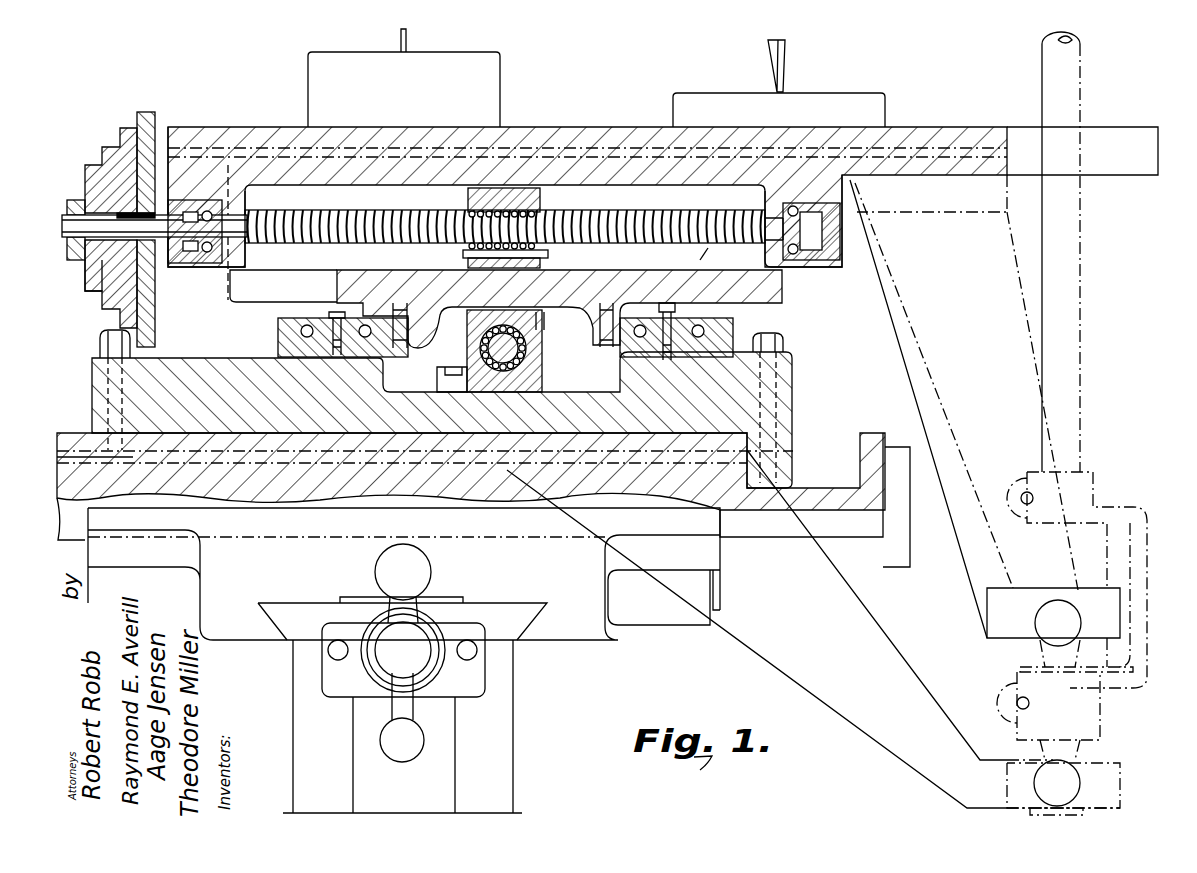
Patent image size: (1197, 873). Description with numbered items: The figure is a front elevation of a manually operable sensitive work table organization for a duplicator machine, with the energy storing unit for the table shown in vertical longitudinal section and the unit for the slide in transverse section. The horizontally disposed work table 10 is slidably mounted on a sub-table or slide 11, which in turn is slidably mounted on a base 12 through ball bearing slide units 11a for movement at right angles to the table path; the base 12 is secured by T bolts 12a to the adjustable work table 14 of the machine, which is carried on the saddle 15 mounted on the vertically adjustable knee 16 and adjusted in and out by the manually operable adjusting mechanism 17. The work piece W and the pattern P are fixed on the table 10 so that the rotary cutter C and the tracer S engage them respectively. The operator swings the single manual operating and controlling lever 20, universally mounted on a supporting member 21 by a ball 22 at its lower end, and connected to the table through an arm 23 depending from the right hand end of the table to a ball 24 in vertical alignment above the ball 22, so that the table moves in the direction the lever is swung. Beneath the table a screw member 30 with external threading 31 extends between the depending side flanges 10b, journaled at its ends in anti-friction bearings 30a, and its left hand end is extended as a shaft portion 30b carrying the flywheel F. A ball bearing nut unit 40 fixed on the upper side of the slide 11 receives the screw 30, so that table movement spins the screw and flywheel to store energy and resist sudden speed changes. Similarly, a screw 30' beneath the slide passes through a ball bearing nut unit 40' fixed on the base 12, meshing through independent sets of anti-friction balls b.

The work table 10 is at (950, 128).
The depending side flanges 10b is at (172, 133).
The work piece W is at (325, 86).
The rotary cutter C is at (400, 34).
The tracer S is at (786, 70).
The pattern P is at (867, 110).
The manual operating and controlling lever 20 is at (1067, 103).
The flywheel F is at (101, 142).
The shaft portion 30b is at (112, 265).
The screw member 30 is at (422, 216).
The anti-friction bearings 30a is at (200, 264).
The ball bearing nut unit 40 is at (517, 228).
The external screw threading 31 is at (655, 248).
The sub-table or slide 11 is at (782, 298).
The ball bearing slide units 11a is at (398, 312).
The base 12 is at (747, 412).
The T bolts 12a is at (278, 320).
The ball bearing nut unit 40' is at (521, 351).
The screw 30' is at (530, 348).
The anti-friction balls b is at (523, 335).
The work table of the duplicator machine 14 is at (800, 463).
The saddle 15 is at (577, 610).
The knee 16 is at (497, 728).
The manually operable adjusting mechanism 17 is at (400, 660).
The supporting member 21 is at (867, 657).
The arm 23 is at (1017, 405).
The ball 24 is at (1057, 622).
The ball 22 is at (1057, 783).